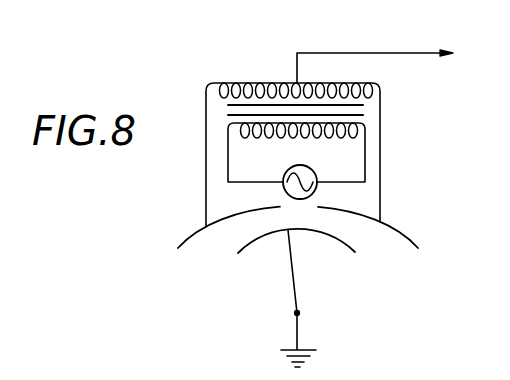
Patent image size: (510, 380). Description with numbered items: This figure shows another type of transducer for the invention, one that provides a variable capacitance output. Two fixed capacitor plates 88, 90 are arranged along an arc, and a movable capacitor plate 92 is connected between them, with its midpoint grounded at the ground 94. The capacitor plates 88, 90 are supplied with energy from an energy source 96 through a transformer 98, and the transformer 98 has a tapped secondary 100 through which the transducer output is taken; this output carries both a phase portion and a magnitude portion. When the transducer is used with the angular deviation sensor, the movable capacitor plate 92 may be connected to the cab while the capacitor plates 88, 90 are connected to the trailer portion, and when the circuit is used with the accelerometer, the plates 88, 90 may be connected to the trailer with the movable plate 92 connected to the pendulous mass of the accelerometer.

The capacitor plate 88 is at (398, 228).
The capacitor plate 90 is at (197, 231).
The movable capacitor plate 92 is at (330, 240).
The midpoint ground 94 is at (299, 333).
The energy source 96 is at (309, 167).
The transformer 98 is at (422, 120).
The tapped secondary 100 is at (391, 53).